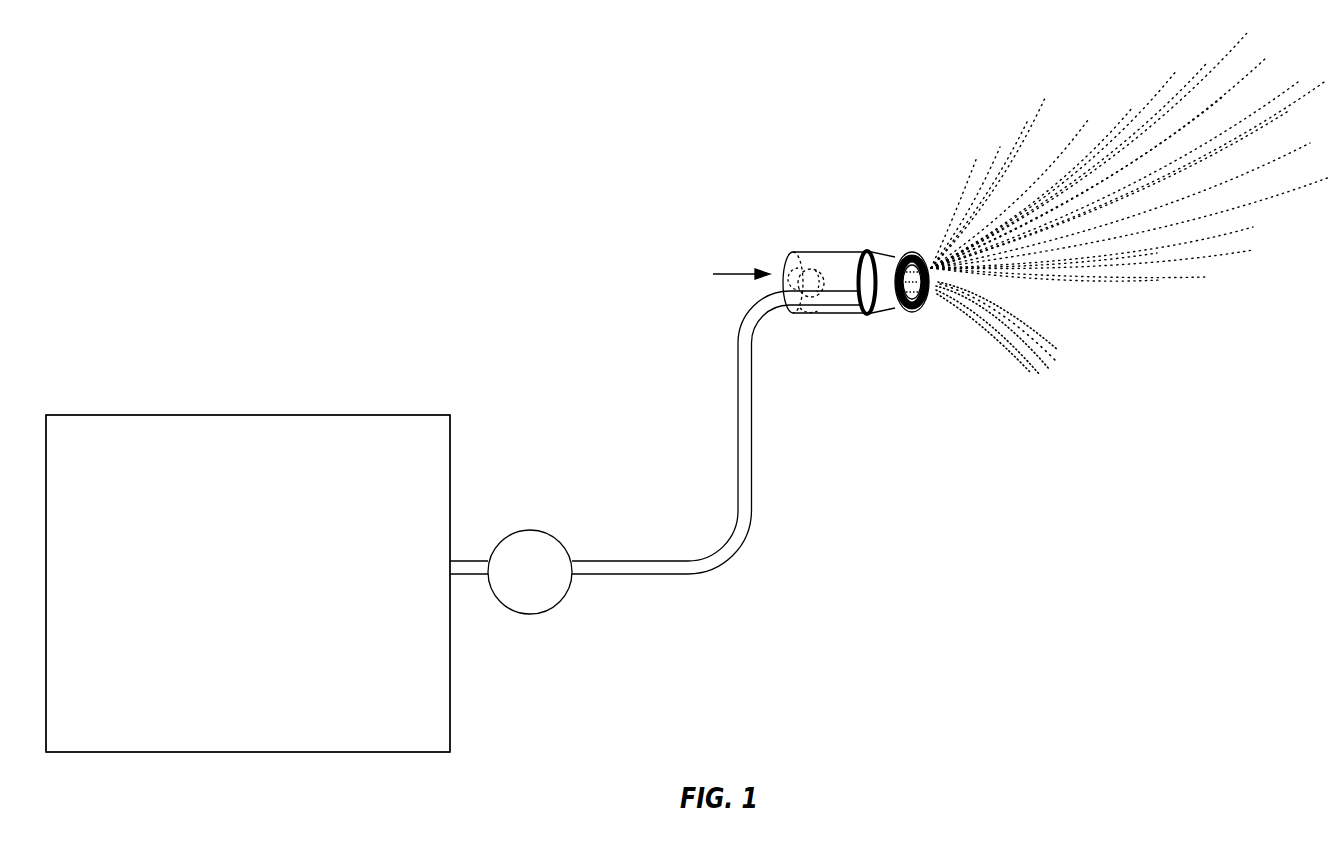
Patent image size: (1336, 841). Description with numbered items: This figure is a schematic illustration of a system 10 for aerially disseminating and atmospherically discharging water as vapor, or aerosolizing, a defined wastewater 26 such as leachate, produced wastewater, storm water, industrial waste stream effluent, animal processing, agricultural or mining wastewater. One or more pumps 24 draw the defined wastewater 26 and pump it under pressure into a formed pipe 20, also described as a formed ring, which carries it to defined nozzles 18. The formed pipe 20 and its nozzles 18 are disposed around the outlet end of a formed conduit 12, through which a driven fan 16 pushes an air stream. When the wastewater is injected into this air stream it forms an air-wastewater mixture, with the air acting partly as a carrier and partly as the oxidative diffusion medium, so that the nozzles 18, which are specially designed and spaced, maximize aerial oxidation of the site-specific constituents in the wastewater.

The wastewater evaporation system 10 is at (725, 130).
The formed conduit 12 is at (888, 232).
The driven fan 16 is at (797, 258).
The nozzles 18 is at (923, 313).
The formed pipe 20 is at (917, 320).
The pump 24 is at (533, 613).
The defined wastewater 26 is at (452, 468).